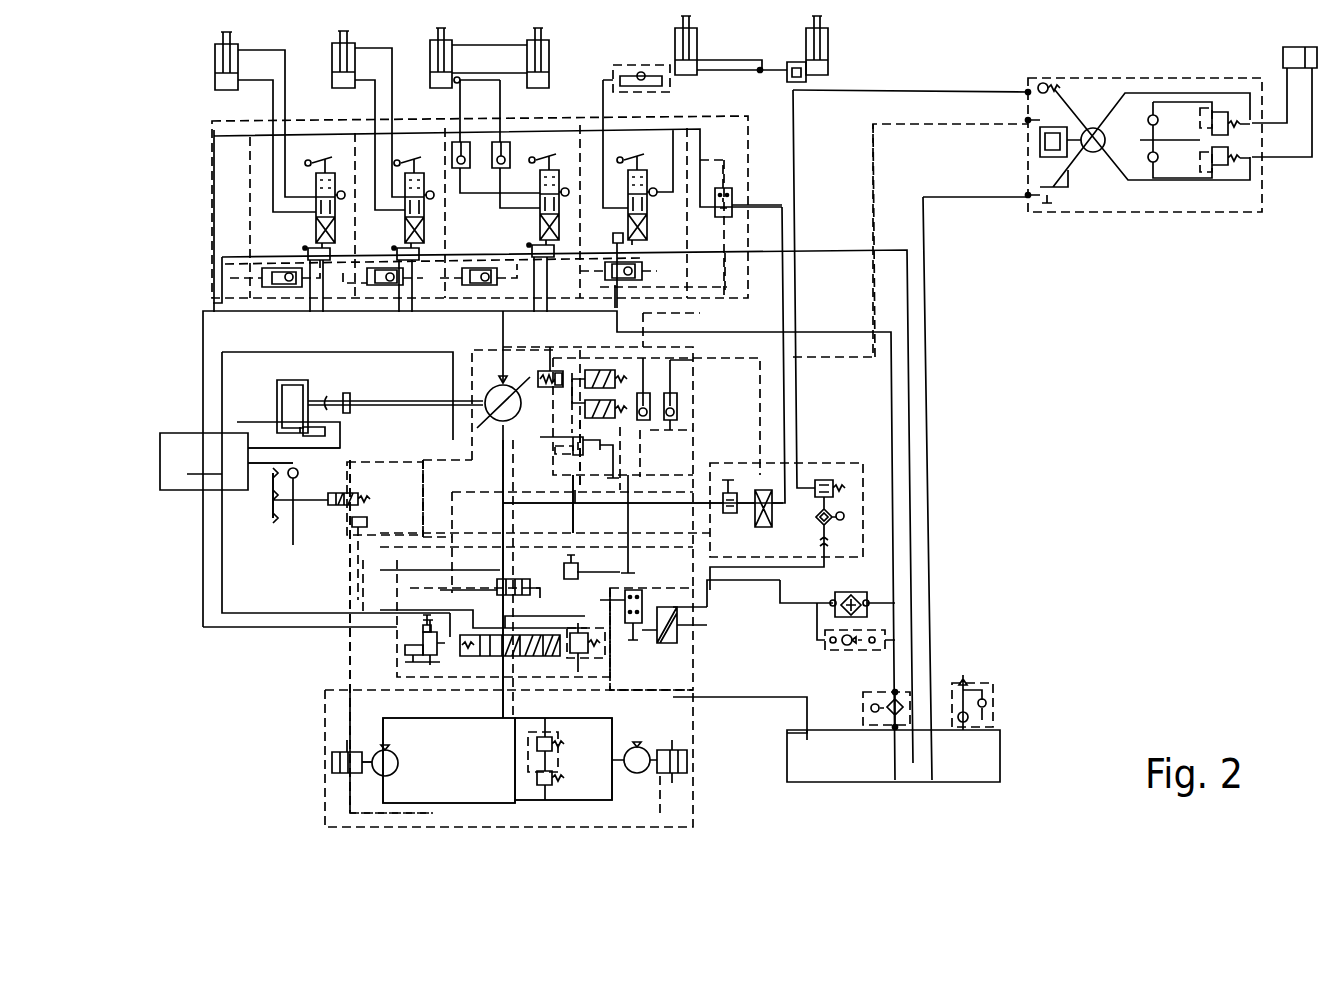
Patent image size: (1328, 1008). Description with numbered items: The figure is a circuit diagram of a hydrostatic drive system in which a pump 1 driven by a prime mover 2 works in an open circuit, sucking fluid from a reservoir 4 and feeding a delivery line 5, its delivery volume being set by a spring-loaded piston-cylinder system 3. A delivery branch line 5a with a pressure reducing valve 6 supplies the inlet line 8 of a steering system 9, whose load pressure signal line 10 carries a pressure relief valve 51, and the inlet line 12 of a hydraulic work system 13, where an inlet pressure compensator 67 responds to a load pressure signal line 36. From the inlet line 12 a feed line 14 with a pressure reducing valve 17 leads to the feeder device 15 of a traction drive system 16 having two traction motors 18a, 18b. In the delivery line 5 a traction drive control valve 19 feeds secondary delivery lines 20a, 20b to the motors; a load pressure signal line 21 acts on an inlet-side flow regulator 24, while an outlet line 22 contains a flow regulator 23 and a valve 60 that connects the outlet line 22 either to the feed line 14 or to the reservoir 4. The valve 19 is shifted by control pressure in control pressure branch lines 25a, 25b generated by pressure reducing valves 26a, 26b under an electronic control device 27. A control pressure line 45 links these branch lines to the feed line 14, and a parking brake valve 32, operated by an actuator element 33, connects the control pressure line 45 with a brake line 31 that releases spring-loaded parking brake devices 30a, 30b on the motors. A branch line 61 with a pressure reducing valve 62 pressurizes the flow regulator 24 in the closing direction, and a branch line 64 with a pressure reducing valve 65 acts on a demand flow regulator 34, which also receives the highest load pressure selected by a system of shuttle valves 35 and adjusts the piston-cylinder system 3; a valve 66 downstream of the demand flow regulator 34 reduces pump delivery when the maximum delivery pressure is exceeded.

The pump 1 is at (453, 367).
The prime mover 2 is at (293, 380).
The spring-loaded piston-cylinder system 3 is at (540, 350).
The reservoir 4 is at (1000, 738).
The delivery line 5 is at (505, 455).
The delivery branch line 5a is at (523, 520).
The pressure reducing valve 6 is at (728, 493).
The inlet line 8 is at (796, 434).
The steering system 9 is at (1153, 232).
The load pressure signal line 10 is at (875, 226).
The inlet line 12 is at (786, 383).
The hydraulic work system 13 is at (762, 141).
The feed line 14 is at (780, 580).
The feeder device 15 is at (542, 756).
The traction drive system 16 is at (317, 803).
The pressure reducing valve 17 is at (833, 480).
The traction motor 18a is at (397, 768).
The traction motor 18b is at (650, 772).
The traction drive control valve 19 is at (487, 652).
The secondary delivery line 20a is at (449, 760).
The secondary delivery line 20b is at (522, 790).
The load pressure signal line 21 is at (445, 500).
The outlet line 22 is at (583, 587).
The flow regulator 23 is at (673, 587).
The flow regulator 24 is at (497, 582).
The control pressure branch line 25a is at (423, 640).
The control pressure branch line 25b is at (423, 647).
The pressure reducing valve 26a is at (417, 660).
The pressure reducing valve 26b is at (587, 632).
The electronic control device 27 is at (250, 461).
The parking brake device 30a is at (340, 752).
The parking brake device 30b is at (673, 747).
The brake line 31 is at (343, 637).
The parking brake valve 32 is at (330, 507).
The actuator element 33 is at (273, 500).
The demand flow regulator 34 is at (617, 408).
The system of shuttle valves 35 is at (615, 410).
The load pressure signal line 36 is at (700, 314).
The control pressure line 45 is at (418, 475).
The pressure relief valve 51 is at (1040, 140).
The valve 60 is at (673, 625).
The branch line 61 is at (580, 570).
The pressure reducing valve 62 is at (613, 623).
The branch line 64 is at (575, 510).
The pressure reducing valve 65 is at (573, 448).
The valve 66 is at (613, 377).
The inlet pressure compensator 67 is at (733, 193).